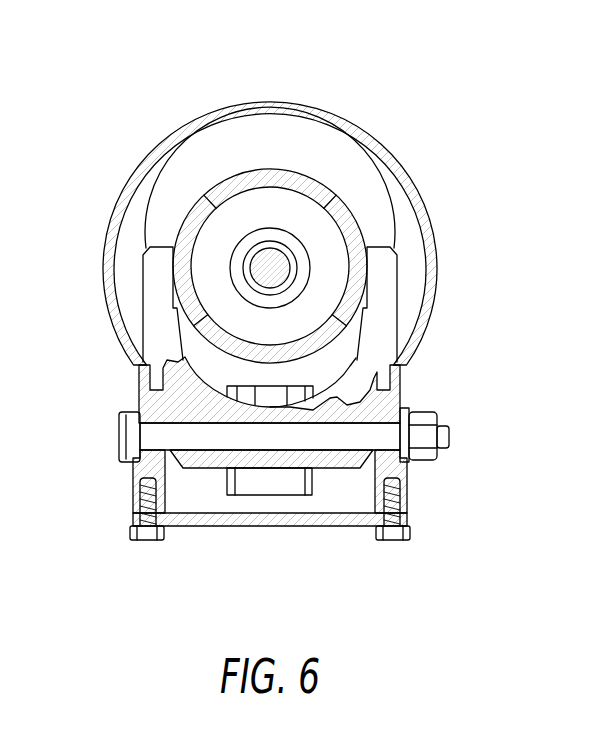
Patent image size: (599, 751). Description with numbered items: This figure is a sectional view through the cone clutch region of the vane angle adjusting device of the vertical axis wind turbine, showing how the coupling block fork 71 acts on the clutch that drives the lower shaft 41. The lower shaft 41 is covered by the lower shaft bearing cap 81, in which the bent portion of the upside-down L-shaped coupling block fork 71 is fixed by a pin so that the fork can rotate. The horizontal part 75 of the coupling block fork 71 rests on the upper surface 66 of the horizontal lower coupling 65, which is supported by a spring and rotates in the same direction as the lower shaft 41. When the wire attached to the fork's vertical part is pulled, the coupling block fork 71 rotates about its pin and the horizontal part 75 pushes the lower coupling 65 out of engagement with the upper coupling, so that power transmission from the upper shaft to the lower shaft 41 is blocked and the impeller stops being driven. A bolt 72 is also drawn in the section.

The lower shaft 41 is at (262, 263).
The lower coupling 65 is at (354, 161).
The upper surface 66 is at (365, 207).
The coupling block fork 71 is at (208, 471).
The clamping bolt 72 is at (128, 430).
The horizontal part 75 is at (153, 277).
The lower shaft bearing cap 81 is at (437, 268).